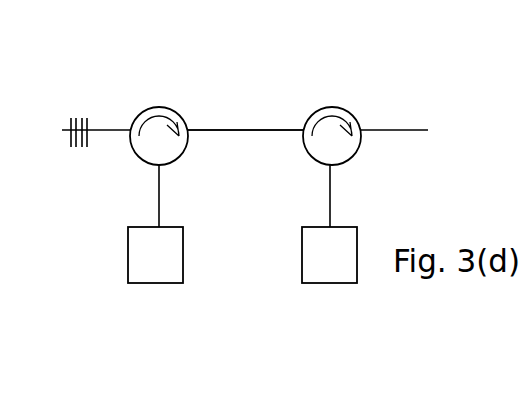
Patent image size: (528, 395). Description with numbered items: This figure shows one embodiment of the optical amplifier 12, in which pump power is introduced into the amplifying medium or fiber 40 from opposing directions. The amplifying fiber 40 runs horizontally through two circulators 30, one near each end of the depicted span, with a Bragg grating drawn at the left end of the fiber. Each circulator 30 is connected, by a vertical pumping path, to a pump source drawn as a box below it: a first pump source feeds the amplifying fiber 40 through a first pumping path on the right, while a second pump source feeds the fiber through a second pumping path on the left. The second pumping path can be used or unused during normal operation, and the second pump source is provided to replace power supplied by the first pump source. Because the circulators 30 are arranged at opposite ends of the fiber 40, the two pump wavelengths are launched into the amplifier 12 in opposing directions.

The optical amplifier 12 is at (426, 87).
The circulator 30 is at (142, 87).
The amplifying medium/fiber 40 is at (215, 130).